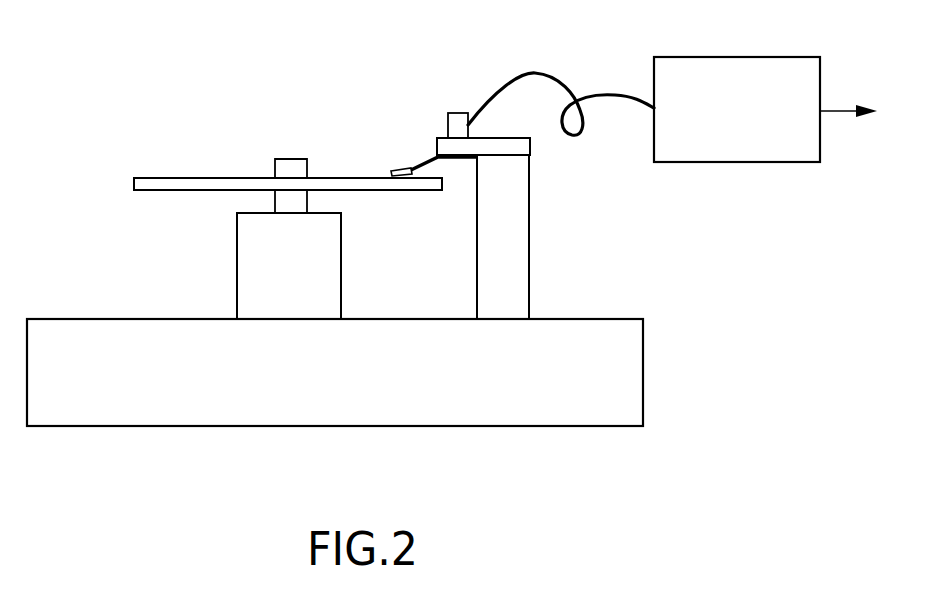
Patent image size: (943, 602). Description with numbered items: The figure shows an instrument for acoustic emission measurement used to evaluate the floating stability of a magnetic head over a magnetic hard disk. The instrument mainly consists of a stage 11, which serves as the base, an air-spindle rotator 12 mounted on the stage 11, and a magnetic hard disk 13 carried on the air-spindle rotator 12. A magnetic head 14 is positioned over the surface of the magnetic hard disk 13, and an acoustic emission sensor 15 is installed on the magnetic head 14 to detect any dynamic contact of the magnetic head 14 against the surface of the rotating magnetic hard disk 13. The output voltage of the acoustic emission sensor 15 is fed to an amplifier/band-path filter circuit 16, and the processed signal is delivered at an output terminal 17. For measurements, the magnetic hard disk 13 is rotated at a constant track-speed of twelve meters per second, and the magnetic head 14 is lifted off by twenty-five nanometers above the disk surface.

The stage 11 is at (643, 358).
The air-spindle rotator 12 is at (237, 288).
The magnetic hard disk 13 is at (165, 178).
The magnetic head 14 is at (423, 162).
The acoustic emission sensor 15 is at (460, 113).
The amplifier/band-path filter circuit 16 is at (702, 162).
The output terminal 17 is at (870, 101).